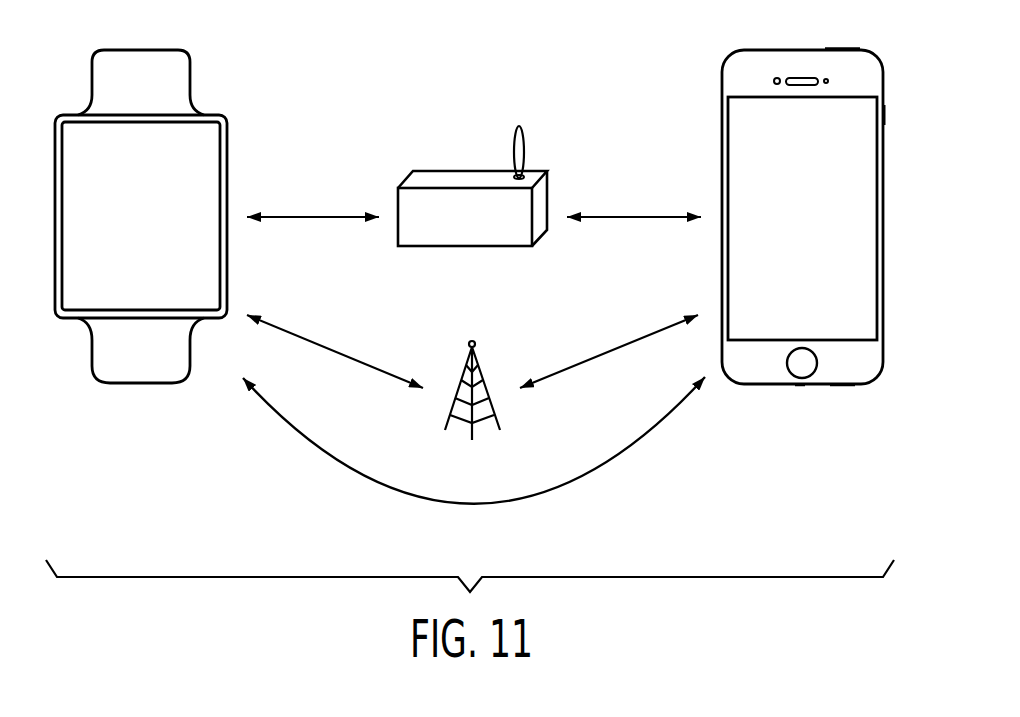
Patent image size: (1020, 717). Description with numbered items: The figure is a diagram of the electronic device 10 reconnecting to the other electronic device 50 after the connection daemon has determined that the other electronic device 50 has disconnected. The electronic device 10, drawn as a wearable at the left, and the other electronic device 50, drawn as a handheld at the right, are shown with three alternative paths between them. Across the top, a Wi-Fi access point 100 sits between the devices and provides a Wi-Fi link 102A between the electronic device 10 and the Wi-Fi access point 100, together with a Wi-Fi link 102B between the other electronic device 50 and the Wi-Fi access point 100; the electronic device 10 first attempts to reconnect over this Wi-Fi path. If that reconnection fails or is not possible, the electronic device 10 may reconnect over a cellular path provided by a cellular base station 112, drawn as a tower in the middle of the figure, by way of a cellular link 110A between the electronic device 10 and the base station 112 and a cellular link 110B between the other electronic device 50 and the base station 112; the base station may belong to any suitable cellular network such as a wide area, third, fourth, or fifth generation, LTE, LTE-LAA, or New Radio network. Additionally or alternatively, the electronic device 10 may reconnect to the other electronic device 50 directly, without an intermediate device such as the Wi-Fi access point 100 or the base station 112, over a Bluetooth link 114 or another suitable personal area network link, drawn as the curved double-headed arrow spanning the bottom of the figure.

The electronic device 10 is at (143, 48).
The other electronic device 50 is at (805, 48).
The Wi-Fi access point 100 is at (463, 171).
The Wi-Fi link 102A is at (318, 217).
The Wi-Fi link 102B is at (637, 217).
The cellular link 110A is at (318, 342).
The cellular link 110B is at (627, 343).
The cellular base station 112 is at (474, 340).
The Bluetooth link 114 is at (470, 503).